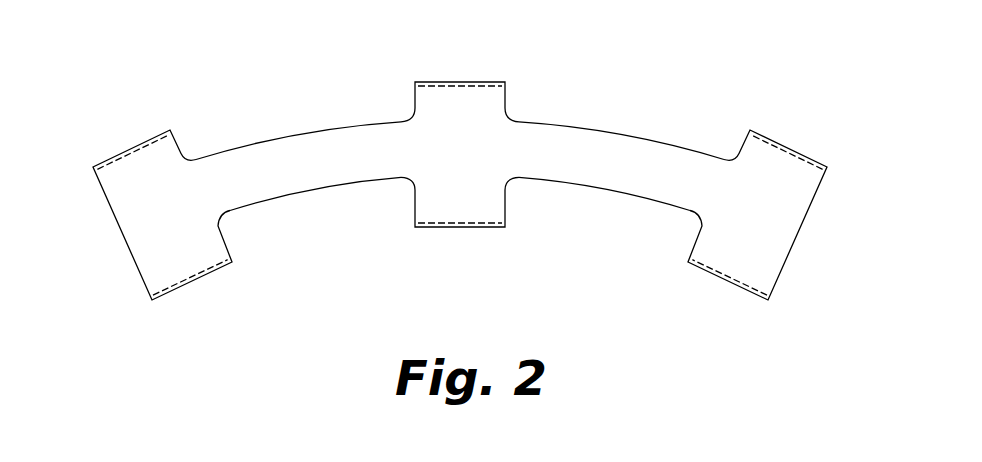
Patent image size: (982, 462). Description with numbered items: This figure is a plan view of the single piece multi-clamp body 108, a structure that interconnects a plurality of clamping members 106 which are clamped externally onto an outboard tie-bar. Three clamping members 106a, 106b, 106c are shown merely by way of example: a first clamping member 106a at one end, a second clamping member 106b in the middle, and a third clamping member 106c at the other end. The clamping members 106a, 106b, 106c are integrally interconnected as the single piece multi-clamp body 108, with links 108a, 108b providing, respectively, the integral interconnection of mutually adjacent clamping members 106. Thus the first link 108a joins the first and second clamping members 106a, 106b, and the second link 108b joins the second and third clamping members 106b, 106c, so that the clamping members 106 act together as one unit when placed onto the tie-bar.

The clamping member 106 is at (460, 176).
The clamping member 106a is at (178, 137).
The clamping member 106b is at (507, 95).
The clamping member 106c is at (737, 148).
The multi-clamp body 108 is at (460, 149).
The link 108a is at (327, 187).
The link 108b is at (590, 185).